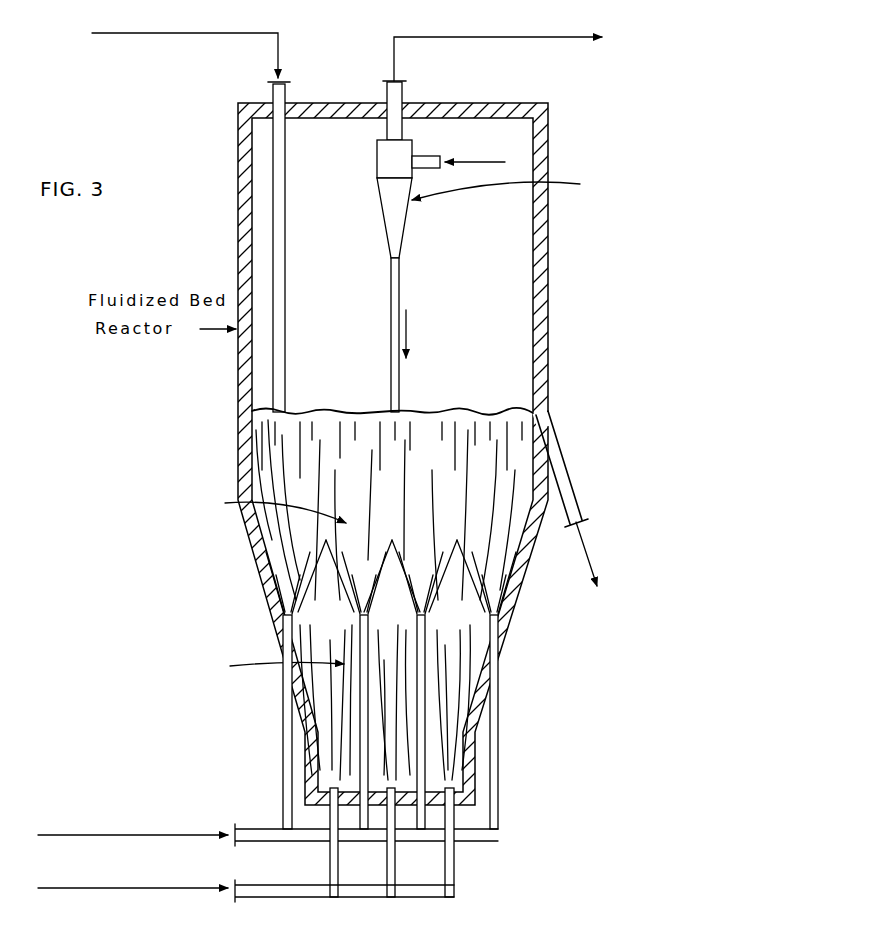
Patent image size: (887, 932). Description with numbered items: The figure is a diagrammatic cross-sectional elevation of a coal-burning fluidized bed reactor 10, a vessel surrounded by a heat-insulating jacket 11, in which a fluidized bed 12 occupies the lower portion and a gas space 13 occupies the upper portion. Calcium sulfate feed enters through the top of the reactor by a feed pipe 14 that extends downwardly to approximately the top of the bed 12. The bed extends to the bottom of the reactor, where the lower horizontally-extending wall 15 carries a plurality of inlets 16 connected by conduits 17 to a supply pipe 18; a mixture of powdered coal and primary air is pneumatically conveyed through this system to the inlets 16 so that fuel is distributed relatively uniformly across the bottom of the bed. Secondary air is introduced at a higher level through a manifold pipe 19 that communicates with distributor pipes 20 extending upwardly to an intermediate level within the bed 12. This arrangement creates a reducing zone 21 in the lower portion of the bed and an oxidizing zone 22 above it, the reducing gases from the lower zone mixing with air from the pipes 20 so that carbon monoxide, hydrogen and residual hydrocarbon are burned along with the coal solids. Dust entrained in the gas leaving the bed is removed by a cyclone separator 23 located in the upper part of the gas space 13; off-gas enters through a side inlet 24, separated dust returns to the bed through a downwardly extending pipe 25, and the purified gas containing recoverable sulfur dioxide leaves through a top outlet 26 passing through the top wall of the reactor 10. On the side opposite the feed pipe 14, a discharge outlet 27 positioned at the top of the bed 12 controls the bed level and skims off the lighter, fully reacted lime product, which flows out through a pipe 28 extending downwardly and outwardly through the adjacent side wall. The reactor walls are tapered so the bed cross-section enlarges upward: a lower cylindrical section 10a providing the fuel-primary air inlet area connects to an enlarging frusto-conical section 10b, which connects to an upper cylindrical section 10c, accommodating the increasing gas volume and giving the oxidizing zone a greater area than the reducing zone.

The fluidized bed reactor 10 is at (236, 186).
The cylindrical section 10a is at (306, 770).
The frusto-conical section 10b is at (266, 577).
The upper cylindrical section 10c is at (238, 430).
The heat-insulating jacket 11 is at (541, 279).
The fluidized bed 12 is at (455, 410).
The gas space 13 is at (392, 267).
The feed pipe 14 is at (285, 198).
The lower horizontally-extending wall 15 is at (464, 806).
The inlets 16 is at (338, 788).
The conduits 17 is at (386, 868).
The supply pipe 18 is at (300, 898).
The manifold pipe 19 is at (253, 828).
The distributor pipes 20 is at (360, 727).
The reducing zone 21 is at (289, 702).
The oxidizing zone 22 is at (311, 600).
The cyclone separator 23 is at (377, 160).
The side inlet 24 is at (426, 168).
The downwardly extending pipe 25 is at (391, 276).
The top outlet 26 is at (402, 96).
The discharge outlet 27 is at (541, 408).
The discharge pipe 28 is at (563, 478).